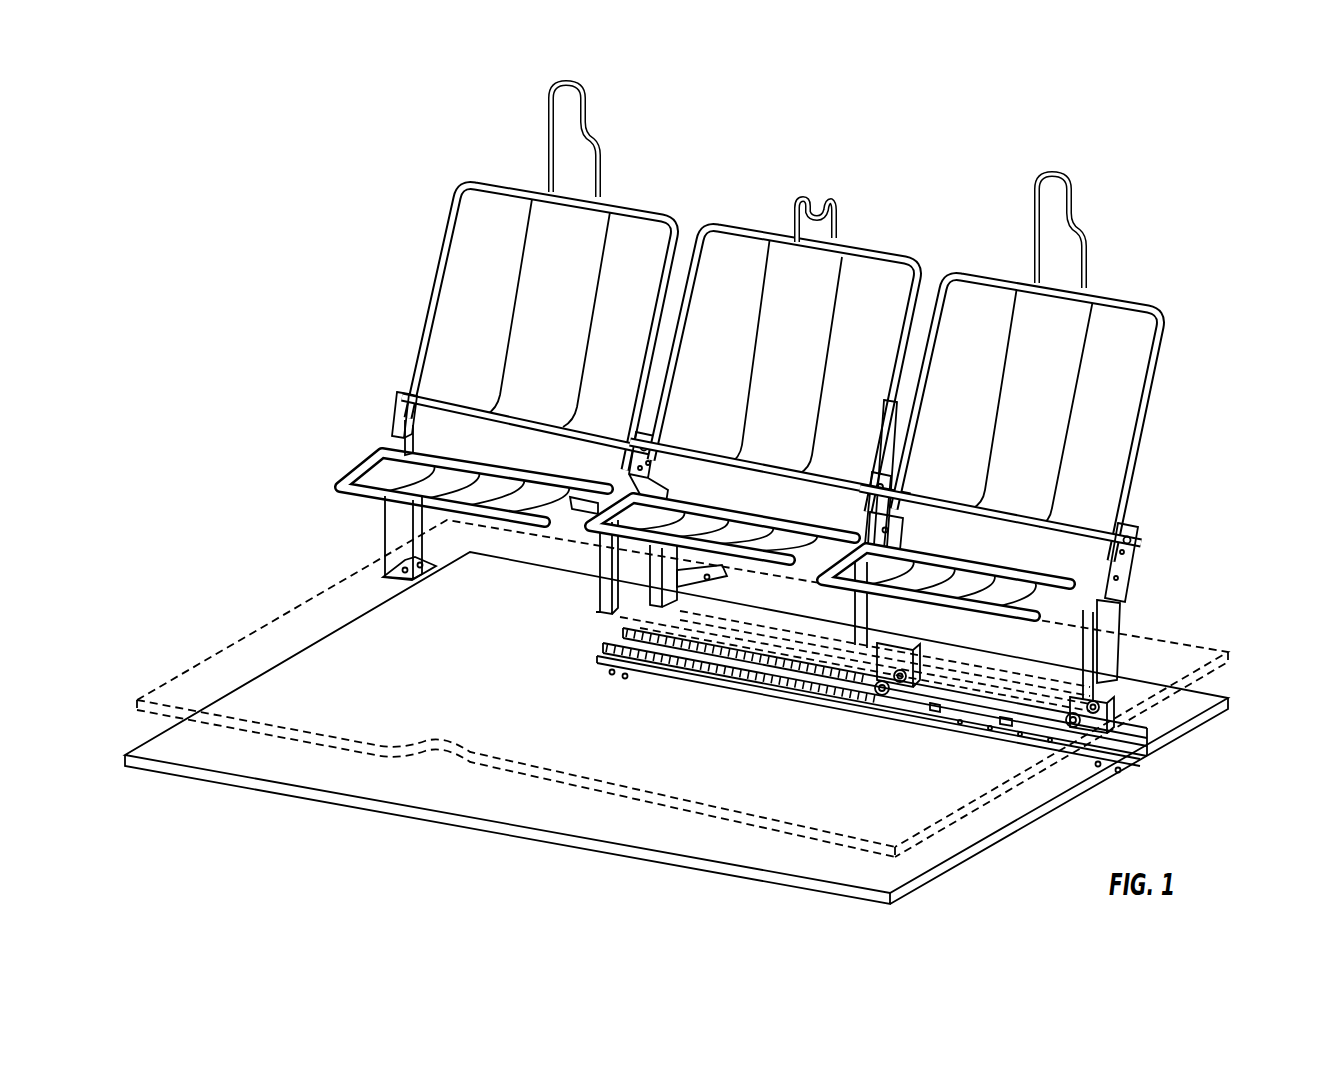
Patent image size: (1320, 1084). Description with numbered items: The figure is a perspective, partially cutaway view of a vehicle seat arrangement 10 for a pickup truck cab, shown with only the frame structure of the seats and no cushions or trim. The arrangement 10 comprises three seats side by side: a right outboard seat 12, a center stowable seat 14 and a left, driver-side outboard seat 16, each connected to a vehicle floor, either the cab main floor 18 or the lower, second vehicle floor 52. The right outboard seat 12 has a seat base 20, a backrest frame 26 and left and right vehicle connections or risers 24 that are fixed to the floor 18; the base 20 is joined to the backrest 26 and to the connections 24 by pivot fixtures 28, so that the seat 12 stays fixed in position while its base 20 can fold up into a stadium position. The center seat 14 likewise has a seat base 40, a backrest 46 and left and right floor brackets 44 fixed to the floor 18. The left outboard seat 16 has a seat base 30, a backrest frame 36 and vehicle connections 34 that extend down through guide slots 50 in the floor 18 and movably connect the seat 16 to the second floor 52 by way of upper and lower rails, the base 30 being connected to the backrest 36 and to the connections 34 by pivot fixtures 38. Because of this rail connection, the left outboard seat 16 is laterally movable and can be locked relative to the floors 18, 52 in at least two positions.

The seat arrangement 10 is at (360, 251).
The right outboard seat 12 is at (496, 348).
The center seat 14 is at (730, 420).
The left outboard seat 16 is at (1019, 453).
The vehicle floor 18 is at (1210, 650).
The seat base 20 is at (338, 484).
The vehicle connections 24 is at (400, 537).
The seat backrest 26 is at (448, 231).
The pivot fixtures 28 is at (403, 393).
The seat base 30 is at (1028, 600).
The vehicle connections 34 is at (1135, 664).
The seat backrest 36 is at (1150, 388).
The pivot fixtures 38 is at (1126, 590).
The seat base 40 is at (588, 528).
The vehicle connections 44 is at (706, 578).
The seat backrest 46 is at (905, 245).
The guide slots 50 is at (1128, 690).
The second vehicle floor 52 is at (1006, 827).